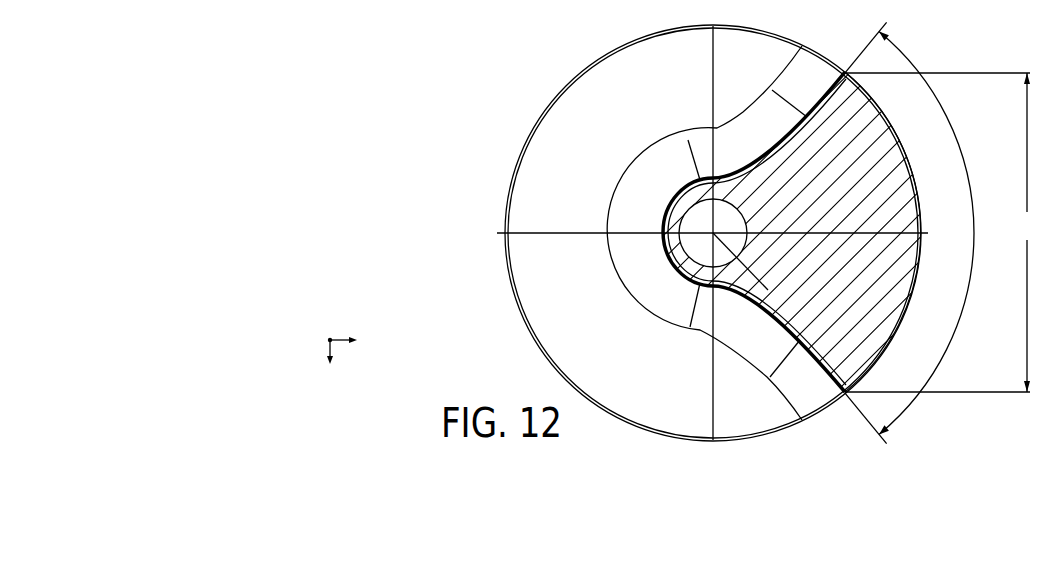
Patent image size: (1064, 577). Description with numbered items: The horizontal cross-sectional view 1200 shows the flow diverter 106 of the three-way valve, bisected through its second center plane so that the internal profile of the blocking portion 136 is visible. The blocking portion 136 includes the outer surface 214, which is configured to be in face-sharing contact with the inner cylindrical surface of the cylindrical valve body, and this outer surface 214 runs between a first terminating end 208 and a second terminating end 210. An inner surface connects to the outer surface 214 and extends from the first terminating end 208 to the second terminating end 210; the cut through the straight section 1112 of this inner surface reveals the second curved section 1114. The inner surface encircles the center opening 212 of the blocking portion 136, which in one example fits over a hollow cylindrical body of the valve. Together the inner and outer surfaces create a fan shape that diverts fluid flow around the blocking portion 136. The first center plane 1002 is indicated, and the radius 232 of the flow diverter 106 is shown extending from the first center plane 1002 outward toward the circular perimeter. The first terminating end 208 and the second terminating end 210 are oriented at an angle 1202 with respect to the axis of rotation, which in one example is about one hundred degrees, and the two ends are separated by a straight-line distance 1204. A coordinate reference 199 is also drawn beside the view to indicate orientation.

The horizontal cross-sectional view 1200 is at (445, 46).
The flow diverter 106 is at (562, 56).
The second curved section 1114 is at (744, 120).
The straight section 1112 is at (654, 209).
The first center plane 1002 is at (550, 237).
The coordinate system 199 is at (327, 298).
The first terminating end 208 is at (846, 70).
The second terminating end 210 is at (848, 390).
The outer surface 214 is at (896, 132).
The angle 1202 is at (938, 233).
The straight-line distance 1204 is at (945, 232).
The center opening 212 is at (739, 214).
The radius 232 is at (752, 278).
The blocking portion 136 is at (859, 292).